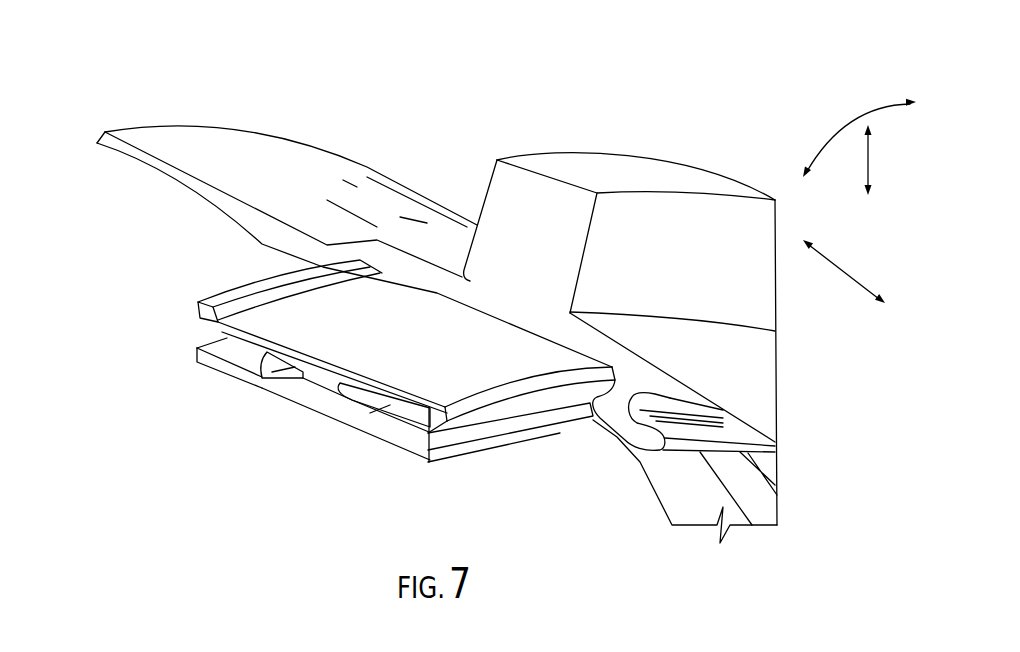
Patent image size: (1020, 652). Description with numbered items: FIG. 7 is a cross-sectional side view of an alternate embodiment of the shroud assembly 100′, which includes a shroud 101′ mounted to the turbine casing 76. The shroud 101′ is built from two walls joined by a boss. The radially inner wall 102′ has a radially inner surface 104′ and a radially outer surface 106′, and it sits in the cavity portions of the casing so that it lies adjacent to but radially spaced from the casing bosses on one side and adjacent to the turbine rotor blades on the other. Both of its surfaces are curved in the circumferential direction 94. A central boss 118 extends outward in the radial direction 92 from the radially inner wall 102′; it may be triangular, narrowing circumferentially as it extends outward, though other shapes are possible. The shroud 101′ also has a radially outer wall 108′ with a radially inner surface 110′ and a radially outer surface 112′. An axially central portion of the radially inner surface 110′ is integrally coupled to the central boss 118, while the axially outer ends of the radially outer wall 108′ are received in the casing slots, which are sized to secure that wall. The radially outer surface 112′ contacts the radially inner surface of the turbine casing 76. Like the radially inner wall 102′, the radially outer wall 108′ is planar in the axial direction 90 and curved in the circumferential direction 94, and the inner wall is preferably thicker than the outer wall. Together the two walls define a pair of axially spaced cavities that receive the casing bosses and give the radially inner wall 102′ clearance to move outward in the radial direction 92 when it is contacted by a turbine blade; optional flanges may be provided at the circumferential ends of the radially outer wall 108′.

The shroud assembly 100′ is at (76, 84).
The turbine casing 76 is at (227, 193).
The radially outer wall 108′ is at (238, 312).
The shroud 101′ is at (178, 388).
The radially inner wall 102′ is at (233, 375).
The radially inner surface 110′ is at (262, 355).
The central boss 118 is at (318, 393).
The radially inner surface 104′ is at (382, 440).
The radially outer surface 106′ is at (430, 448).
The radially outer surface 112′ is at (420, 335).
The axial direction 90 is at (850, 275).
The radial direction 92 is at (870, 162).
The circumferential direction 94 is at (853, 117).